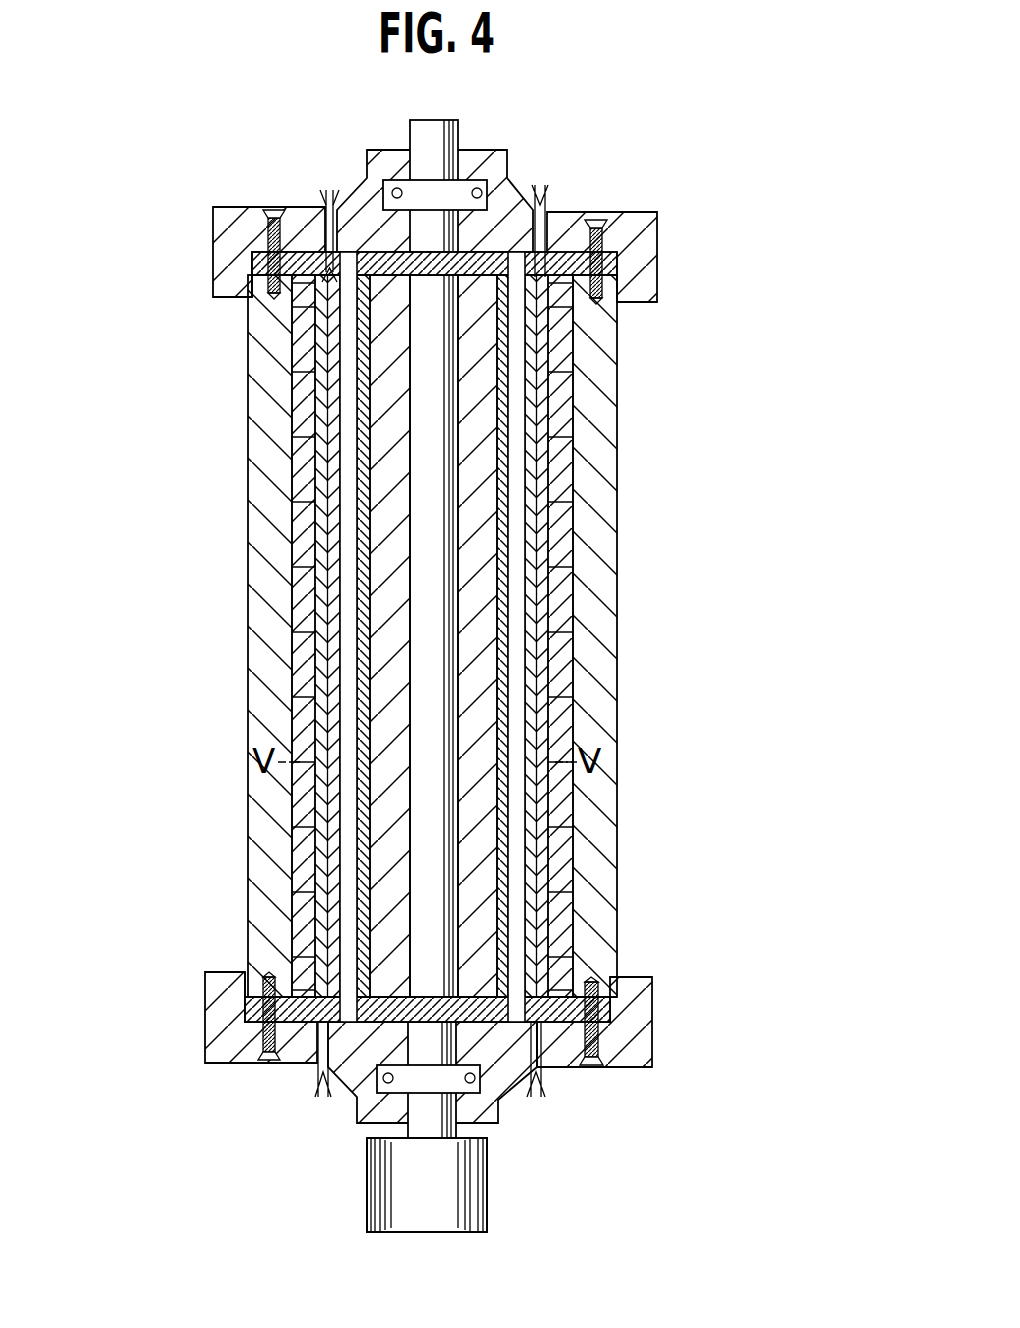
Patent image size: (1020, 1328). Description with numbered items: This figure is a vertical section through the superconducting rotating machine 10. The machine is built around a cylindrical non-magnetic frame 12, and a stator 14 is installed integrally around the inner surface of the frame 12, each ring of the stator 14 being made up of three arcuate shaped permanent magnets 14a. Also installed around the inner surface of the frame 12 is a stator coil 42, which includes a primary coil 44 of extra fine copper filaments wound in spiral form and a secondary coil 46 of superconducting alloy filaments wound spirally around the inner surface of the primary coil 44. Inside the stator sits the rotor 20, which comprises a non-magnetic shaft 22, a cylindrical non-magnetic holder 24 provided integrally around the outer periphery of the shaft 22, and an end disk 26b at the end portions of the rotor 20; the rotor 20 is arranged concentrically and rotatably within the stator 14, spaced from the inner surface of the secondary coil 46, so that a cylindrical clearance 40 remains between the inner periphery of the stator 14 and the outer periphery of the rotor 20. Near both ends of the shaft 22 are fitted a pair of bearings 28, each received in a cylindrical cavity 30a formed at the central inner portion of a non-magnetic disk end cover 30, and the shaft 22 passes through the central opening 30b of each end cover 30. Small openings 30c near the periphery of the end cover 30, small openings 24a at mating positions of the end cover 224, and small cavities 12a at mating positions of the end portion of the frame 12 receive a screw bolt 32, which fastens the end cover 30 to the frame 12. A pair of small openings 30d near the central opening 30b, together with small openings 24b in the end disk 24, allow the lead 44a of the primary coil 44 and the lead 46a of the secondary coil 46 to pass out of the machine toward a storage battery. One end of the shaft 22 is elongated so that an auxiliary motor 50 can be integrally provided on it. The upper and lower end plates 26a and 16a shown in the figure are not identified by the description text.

The superconducting rotating machine 10 is at (142, 165).
The cylindrical non-magnetic frame 12 is at (262, 400).
The small cavities 12a is at (590, 983).
The stator 14 is at (284, 465).
The arcuate shaped permanent magnets 14a is at (300, 548).
The lower mounting plate 16a is at (538, 1092).
The rotor 20 is at (507, 538).
The non-magnetic shaft 22 is at (460, 125).
The cylindrical non-magnetic holder 24 is at (478, 410).
The small openings 24a is at (262, 296).
The small openings 24b is at (605, 273).
The upper end plate 26a is at (585, 320).
The end disk 26b is at (385, 1015).
The bearings 28 is at (517, 172).
The non-magnetic disk end cover 30 is at (660, 255).
The cylindrical cavities 30a is at (488, 1098).
The central openings 30b is at (405, 150).
The small openings 30c is at (232, 255).
The small openings 30d is at (545, 207).
The screw bolt 32 is at (280, 1066).
The cylindrical clearance 40 is at (345, 652).
The stator coil 42 is at (554, 470).
The primary coil 44 is at (540, 598).
The lead 44a is at (323, 193).
The secondary coil 46 is at (533, 663).
The lead 46a is at (332, 190).
The auxiliary motor 50 is at (400, 1235).
The end cover 224 is at (627, 242).